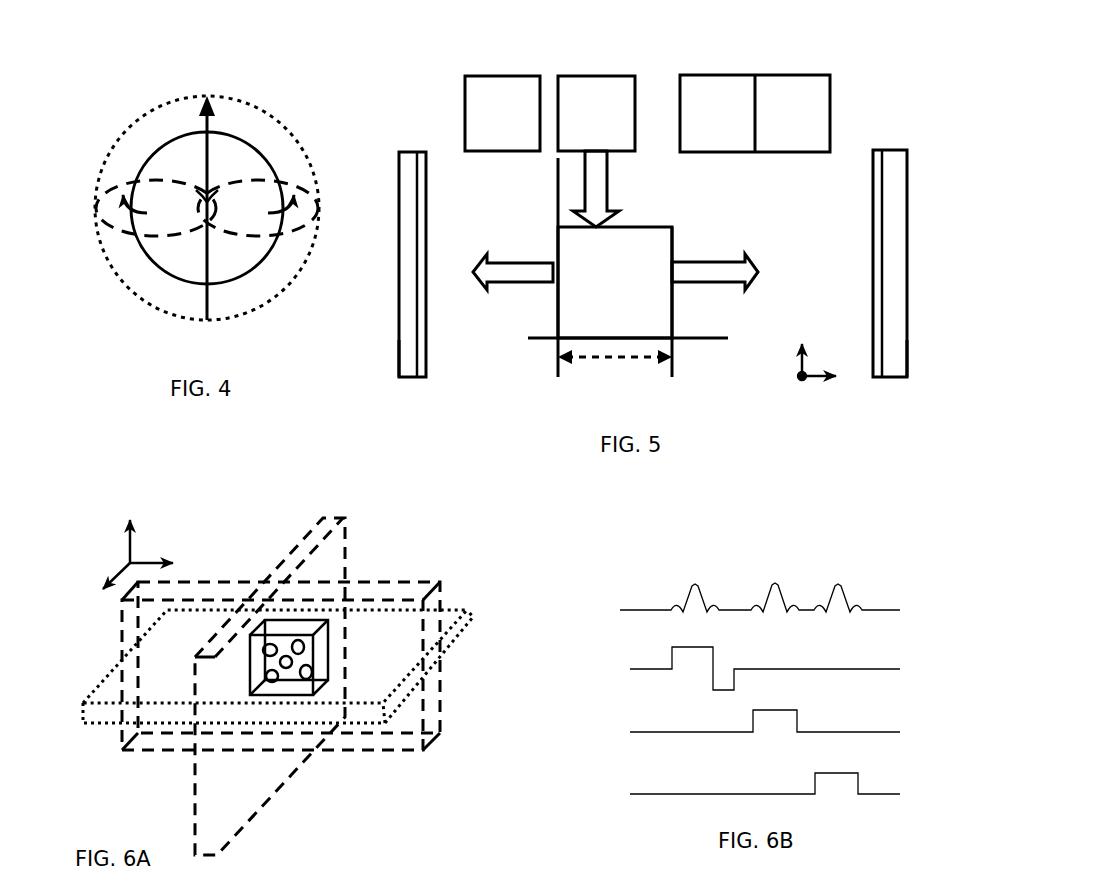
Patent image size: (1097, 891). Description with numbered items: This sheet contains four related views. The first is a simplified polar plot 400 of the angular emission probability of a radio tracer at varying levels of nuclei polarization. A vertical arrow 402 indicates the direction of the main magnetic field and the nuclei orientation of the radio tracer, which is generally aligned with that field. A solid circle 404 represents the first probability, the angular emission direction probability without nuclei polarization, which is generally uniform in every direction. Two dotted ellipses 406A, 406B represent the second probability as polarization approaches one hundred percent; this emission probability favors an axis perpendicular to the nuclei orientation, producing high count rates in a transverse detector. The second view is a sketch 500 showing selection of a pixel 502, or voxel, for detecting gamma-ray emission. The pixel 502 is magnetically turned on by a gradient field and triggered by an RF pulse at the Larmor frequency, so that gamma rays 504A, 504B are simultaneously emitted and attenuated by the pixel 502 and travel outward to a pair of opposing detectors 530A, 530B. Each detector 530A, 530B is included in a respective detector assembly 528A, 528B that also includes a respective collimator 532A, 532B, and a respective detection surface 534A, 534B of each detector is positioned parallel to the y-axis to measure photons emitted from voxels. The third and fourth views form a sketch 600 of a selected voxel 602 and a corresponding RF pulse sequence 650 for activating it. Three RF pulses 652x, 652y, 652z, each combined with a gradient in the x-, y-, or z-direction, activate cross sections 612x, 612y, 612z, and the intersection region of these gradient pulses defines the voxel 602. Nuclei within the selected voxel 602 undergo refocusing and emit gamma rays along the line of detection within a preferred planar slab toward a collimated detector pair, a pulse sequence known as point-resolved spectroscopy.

In FIG. 4, the simplified polar plot 400 is at (117, 40).
In FIG. 4, the arrow 402 is at (203, 123).
In FIG. 4, the solid circle 404 is at (250, 147).
In FIG. 4, the dotted ellipse 406A is at (153, 209).
In FIG. 4, the dotted ellipse 406B is at (258, 209).
In FIG. 5, the sketch 500 is at (875, 40).
In FIG. 5, the pixel 502 is at (655, 243).
In FIG. 5, the gamma ray 504A is at (712, 265).
In FIG. 5, the gamma ray 504B is at (528, 270).
In FIG. 5, the detector assembly 528A is at (876, 136).
In FIG. 5, the detector assembly 528B is at (404, 130).
In FIG. 5, the detector 530A is at (890, 352).
In FIG. 5, the detector 530B is at (404, 363).
In FIG. 5, the collimator 532A is at (878, 205).
In FIG. 5, the collimator 532B is at (424, 205).
In FIG. 5, the detection surface 534A is at (863, 289).
In FIG. 5, the detection surface 534B is at (438, 297).
In FIG. 6A, the sketch 600 is at (393, 520).
In FIG. 6A, the selected voxel 602 is at (331, 660).
In FIG. 6A, the cross section 612x is at (393, 583).
In FIG. 6A, the cross section 612y is at (461, 631).
In FIG. 6A, the cross section 612z is at (309, 546).
In FIG. 6B, the RF pulse sequence 650 is at (657, 518).
In FIG. 6B, the RF pulse 652x is at (704, 593).
In FIG. 6B, the RF pulse 652y is at (789, 591).
In FIG. 6B, the RF pulse 652z is at (857, 589).